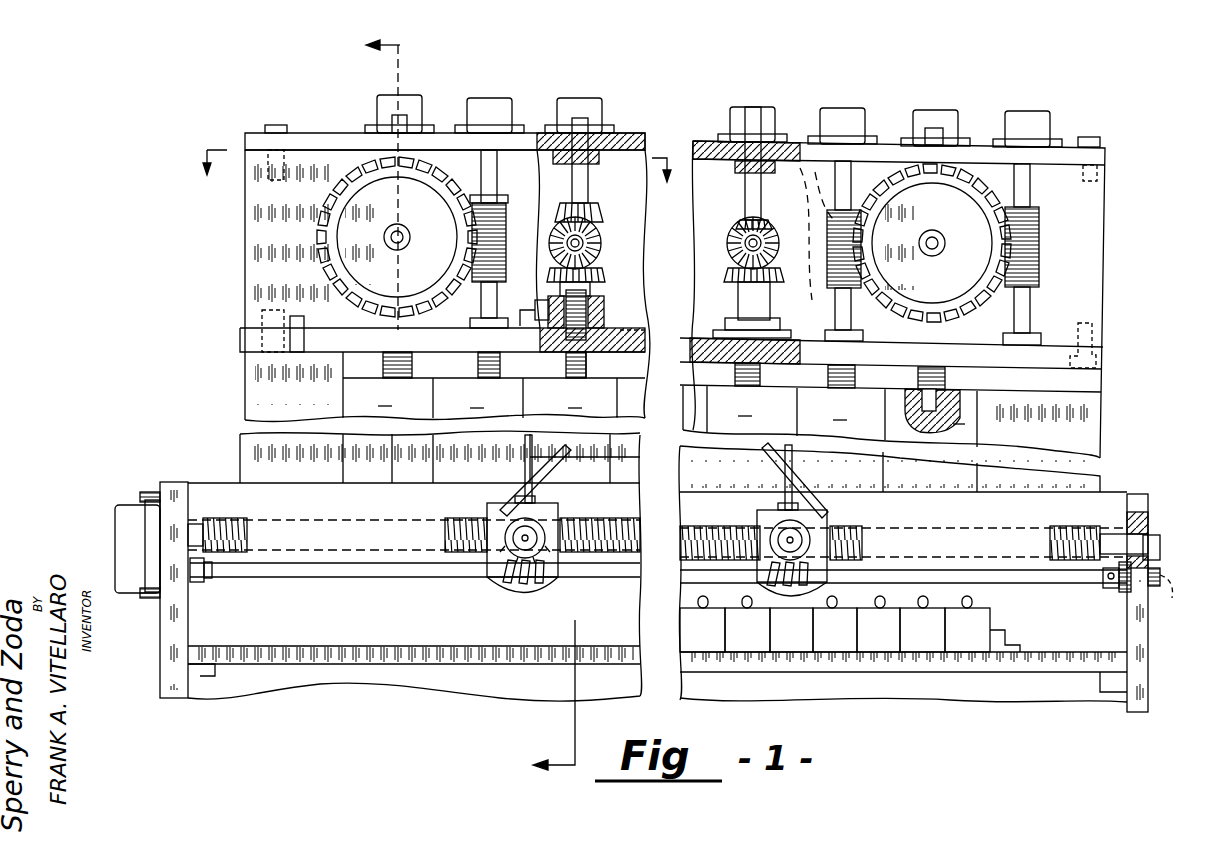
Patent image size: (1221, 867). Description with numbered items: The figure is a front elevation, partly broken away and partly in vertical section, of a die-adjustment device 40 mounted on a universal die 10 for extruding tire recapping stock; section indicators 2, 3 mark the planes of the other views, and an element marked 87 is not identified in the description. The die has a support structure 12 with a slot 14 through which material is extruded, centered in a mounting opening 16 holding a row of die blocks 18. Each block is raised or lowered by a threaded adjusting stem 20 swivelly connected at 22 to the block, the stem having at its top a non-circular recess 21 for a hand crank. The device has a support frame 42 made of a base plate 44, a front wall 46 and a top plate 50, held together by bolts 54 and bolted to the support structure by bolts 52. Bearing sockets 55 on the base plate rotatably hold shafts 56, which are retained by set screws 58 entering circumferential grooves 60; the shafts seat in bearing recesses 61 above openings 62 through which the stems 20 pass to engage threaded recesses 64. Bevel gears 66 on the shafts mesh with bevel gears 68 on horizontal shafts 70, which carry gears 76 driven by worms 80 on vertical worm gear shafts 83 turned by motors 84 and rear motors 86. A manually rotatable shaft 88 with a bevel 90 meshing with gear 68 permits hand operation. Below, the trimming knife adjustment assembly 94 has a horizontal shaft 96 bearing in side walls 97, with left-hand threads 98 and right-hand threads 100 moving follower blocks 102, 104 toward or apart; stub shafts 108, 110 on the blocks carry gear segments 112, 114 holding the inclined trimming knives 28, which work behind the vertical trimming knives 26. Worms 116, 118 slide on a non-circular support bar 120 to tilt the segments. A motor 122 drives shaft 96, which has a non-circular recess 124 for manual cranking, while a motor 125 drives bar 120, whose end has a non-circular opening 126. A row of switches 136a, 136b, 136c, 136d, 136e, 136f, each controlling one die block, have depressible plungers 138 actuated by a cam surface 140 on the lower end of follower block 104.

The section line 2- 2 is at (423, 155).
The section line 3- 3 is at (448, 404).
The universal die 10 is at (162, 674).
The support structure 12 is at (220, 366).
The slot 14 is at (695, 482).
The mounting opening 16 is at (343, 378).
The die blocks 18 is at (452, 382).
The die block adjusting stems 20 is at (566, 380).
The non-circular recesses 21 is at (540, 342).
The swivel connection 22 is at (920, 404).
The vertical trimming knives 26 is at (524, 456).
The inclined trimming knives 28 is at (546, 462).
The die-adjustment device 40 is at (212, 298).
The support frame 42 is at (268, 210).
The base plate 44 is at (428, 328).
The front wall 46 is at (245, 258).
The top plate 50 is at (445, 134).
The bolts 52 is at (306, 318).
The bolts 54 is at (280, 124).
The bearing sockets 55 is at (625, 325).
The shafts 56 is at (556, 302).
The set screws 58 is at (535, 312).
The circumferential grooves 60 is at (604, 312).
The bearing recesses 61 is at (588, 358).
The smooth-walled openings 62 is at (566, 356).
The threaded recesses 64 is at (596, 304).
The bevel gears 66 is at (552, 262).
The bevel gears 68 is at (600, 240).
The horizontal shafts 70 is at (405, 245).
The gears 76 is at (325, 262).
The worms 80 is at (500, 210).
The worm gear shafts 83 is at (478, 192).
The motors 84 is at (492, 97).
The rear motors 86 is at (412, 94).
The shaft 87 is at (338, 196).
The manually rotatable vertical shaft 88 is at (398, 118).
The bevel 90 is at (596, 218).
The trimming knife adjustment assembly 94 is at (243, 521).
The horizontal shaft 96 is at (200, 520).
The side walls 97 is at (180, 605).
The left-hand threads 98 is at (448, 520).
The right-hand threads 100 is at (862, 538).
The follower block 102 is at (582, 490).
The follower block 104 is at (830, 512).
The stub shaft 108 is at (540, 550).
The stub shaft 110 is at (830, 566).
The gear segment 112 is at (505, 560).
The gear segment 114 is at (792, 555).
The worm 116 is at (520, 588).
The worm 118 is at (832, 600).
The support bar 120 is at (280, 580).
The motor 122 is at (120, 504).
The non-circular recess 124 is at (1152, 540).
The motor 125 is at (140, 596).
The non-circular opening 126 is at (1172, 600).
The switch 136a is at (747, 630).
The switch 136b is at (791, 630).
The switch 136c is at (835, 630).
The switch 136d is at (878, 630).
The switch 136e is at (922, 630).
The switch 136f is at (967, 630).
The depressible plungers 138 is at (967, 600).
The cam surface 140 is at (705, 598).